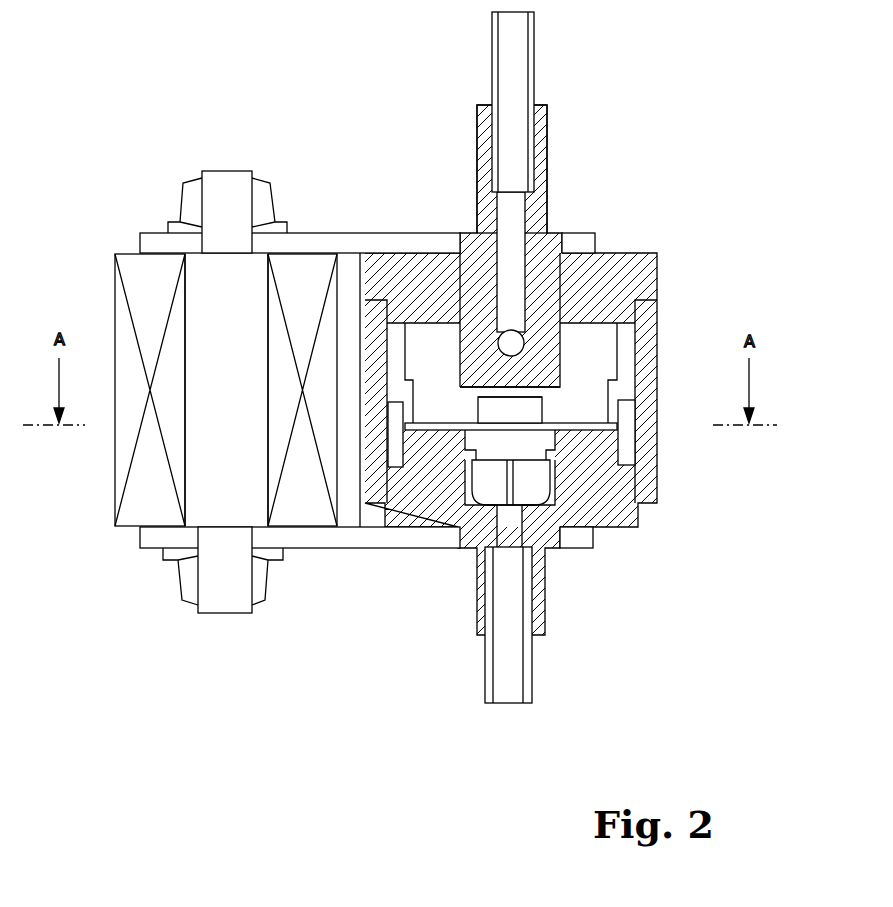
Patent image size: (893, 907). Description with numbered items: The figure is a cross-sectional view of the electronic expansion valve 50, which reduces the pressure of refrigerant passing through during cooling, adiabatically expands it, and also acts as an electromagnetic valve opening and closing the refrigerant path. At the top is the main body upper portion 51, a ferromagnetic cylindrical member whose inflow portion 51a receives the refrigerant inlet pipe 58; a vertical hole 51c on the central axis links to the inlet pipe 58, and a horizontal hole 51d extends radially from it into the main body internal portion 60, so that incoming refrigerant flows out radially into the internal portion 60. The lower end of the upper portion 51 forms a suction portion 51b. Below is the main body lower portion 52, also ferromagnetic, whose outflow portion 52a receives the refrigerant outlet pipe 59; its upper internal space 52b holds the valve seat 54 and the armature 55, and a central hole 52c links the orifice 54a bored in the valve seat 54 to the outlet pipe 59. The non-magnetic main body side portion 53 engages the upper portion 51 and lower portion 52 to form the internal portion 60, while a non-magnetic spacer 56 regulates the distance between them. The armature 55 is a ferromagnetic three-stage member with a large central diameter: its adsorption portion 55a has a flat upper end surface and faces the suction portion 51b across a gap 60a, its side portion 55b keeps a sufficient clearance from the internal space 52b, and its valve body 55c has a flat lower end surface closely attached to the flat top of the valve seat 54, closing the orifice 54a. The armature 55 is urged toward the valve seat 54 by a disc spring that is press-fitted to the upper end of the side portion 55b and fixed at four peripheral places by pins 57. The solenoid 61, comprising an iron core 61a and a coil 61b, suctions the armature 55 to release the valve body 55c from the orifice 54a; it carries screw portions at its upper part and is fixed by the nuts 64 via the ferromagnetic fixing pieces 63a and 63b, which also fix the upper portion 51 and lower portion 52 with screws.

The electronic expansion valve 50 is at (342, 130).
The main body upper portion 51 is at (568, 243).
The inflow portion 51a is at (541, 135).
The suction portion 51b is at (512, 380).
The vertical hole 51c is at (511, 222).
The horizontal hole 51d is at (530, 308).
The main body lower portion 52 is at (559, 574).
The outflow portion 52a is at (540, 612).
The internal space 52b is at (540, 438).
The hole 52c is at (503, 517).
The main body side portion 53 is at (641, 388).
The valve seat 54 is at (593, 535).
The orifice 54a is at (545, 487).
The armature 55 is at (544, 470).
The adsorption portion 55a is at (492, 405).
The side portion 55b is at (478, 443).
The valve body 55c is at (457, 497).
The spacer 56 is at (622, 353).
The pins 57 is at (620, 448).
The refrigerant inlet pipe 58 is at (533, 53).
The refrigerant outlet pipe 59 is at (532, 668).
The main body internal portion 60 is at (590, 337).
The gap 60a is at (512, 393).
The solenoid 61 is at (212, 454).
The iron core 61a is at (217, 478).
The coil 61b is at (140, 503).
The fixing piece 63a is at (348, 247).
The fixing piece 63b is at (313, 540).
The nuts 64 is at (193, 193).